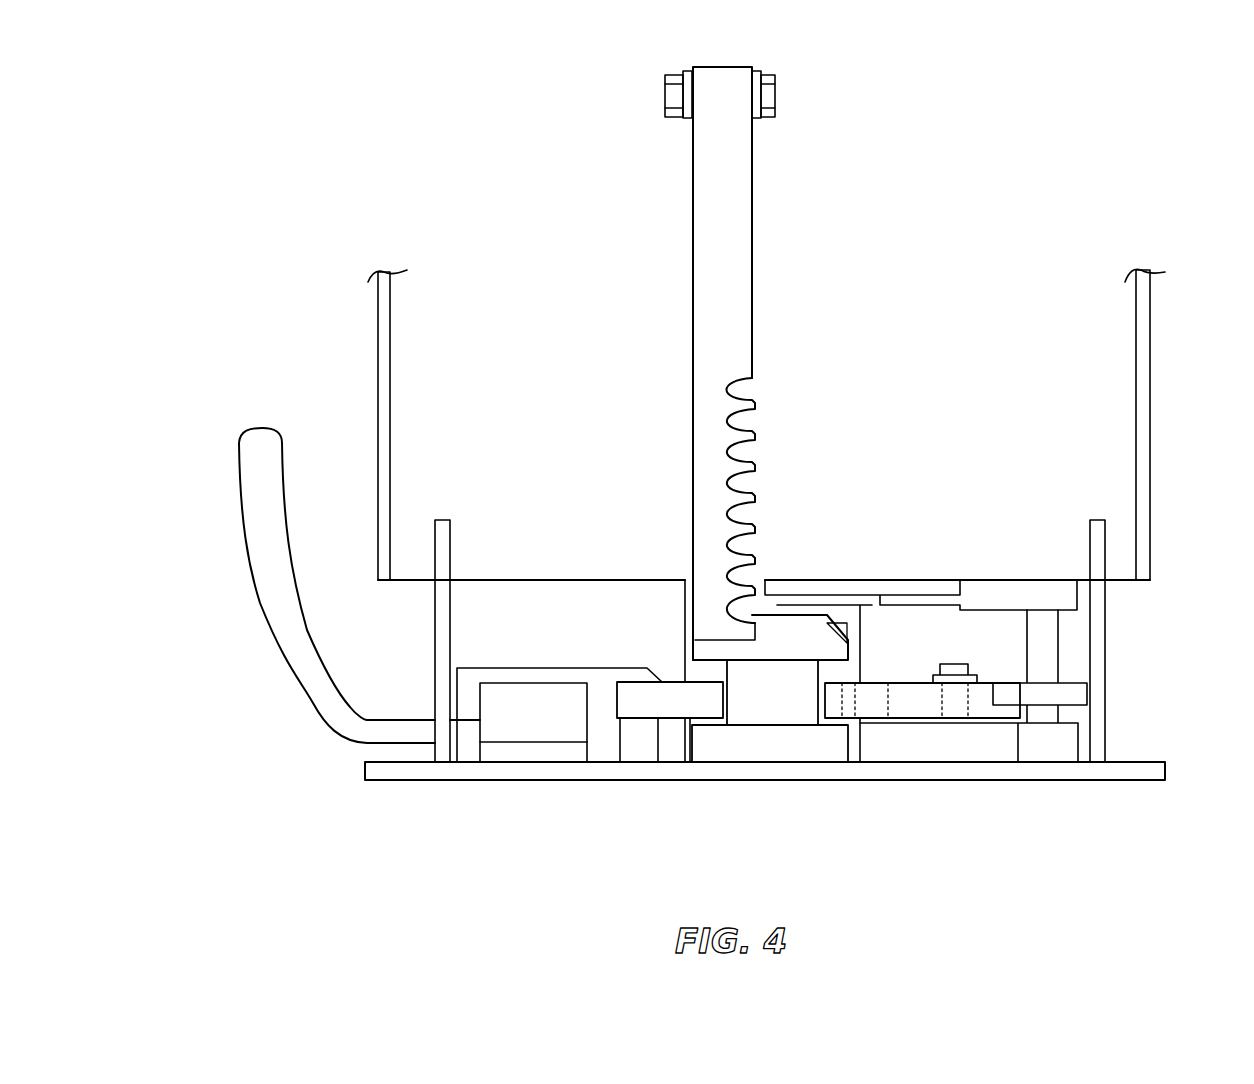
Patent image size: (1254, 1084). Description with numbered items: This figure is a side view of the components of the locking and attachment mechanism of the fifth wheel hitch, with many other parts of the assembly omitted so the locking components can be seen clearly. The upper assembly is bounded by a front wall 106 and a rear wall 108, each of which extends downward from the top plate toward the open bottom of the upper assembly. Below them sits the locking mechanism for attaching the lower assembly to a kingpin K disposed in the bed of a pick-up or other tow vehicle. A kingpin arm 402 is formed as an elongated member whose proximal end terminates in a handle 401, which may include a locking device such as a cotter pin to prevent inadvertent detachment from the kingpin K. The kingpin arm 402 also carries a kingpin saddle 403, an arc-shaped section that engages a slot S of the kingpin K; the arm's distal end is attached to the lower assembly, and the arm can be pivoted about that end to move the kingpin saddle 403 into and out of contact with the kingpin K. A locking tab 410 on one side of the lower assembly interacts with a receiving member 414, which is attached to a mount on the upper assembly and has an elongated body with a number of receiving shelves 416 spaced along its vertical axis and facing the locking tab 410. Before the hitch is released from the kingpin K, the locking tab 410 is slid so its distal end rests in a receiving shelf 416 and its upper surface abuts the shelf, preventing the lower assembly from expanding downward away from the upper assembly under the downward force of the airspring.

The front wall 106 is at (1143, 316).
The rear wall 108 is at (375, 358).
The handle 401 is at (241, 507).
The kingpin arm 402 is at (647, 700).
The kingpin saddle 403 is at (848, 707).
The locking tab 410 is at (835, 583).
The receiving member 414 is at (733, 227).
The receiving shelves 416 is at (747, 520).
The kingpin K is at (787, 743).
The slot S is at (845, 673).